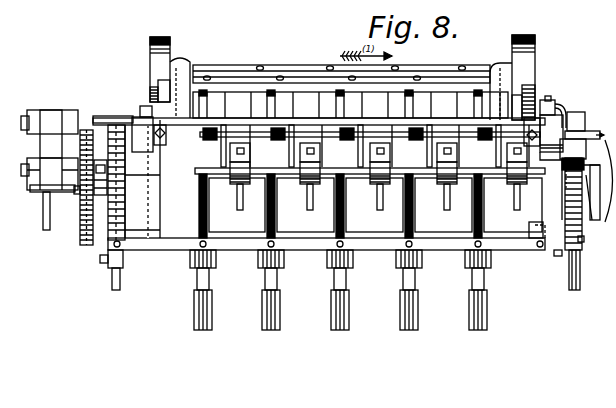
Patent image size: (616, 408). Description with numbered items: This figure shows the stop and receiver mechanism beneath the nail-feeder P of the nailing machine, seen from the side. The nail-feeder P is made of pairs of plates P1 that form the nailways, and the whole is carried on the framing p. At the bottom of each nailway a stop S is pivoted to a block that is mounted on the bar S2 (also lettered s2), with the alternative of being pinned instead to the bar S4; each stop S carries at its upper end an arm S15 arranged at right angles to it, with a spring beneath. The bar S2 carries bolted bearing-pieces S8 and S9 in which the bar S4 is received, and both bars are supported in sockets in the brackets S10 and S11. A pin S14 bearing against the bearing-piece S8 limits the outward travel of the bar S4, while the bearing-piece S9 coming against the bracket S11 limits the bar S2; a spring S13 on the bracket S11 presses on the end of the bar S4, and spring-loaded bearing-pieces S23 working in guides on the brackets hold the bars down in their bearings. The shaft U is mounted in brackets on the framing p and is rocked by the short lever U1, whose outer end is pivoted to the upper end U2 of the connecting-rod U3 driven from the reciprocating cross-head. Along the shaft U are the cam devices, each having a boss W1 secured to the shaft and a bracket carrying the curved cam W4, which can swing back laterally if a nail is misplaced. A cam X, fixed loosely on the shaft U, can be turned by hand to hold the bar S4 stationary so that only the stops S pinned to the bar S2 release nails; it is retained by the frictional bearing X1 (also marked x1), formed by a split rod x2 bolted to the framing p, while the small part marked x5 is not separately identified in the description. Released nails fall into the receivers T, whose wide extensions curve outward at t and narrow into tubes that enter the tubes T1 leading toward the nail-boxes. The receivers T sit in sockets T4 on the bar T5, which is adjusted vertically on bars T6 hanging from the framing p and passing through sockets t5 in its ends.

The nail-feeder P is at (341, 59).
The plates P1 is at (340, 77).
The framing p is at (342, 94).
The arm S15 is at (222, 124).
The pin S14 is at (180, 118).
The bar S2 is at (370, 135).
The stop S is at (357, 152).
The boss W1 is at (244, 185).
The curved cam W4 is at (376, 202).
The receiver T is at (370, 206).
The socket T4 is at (348, 259).
The tube T1 is at (349, 299).
The upper end of connecting-rod U2 is at (55, 110).
The short lever U1 is at (38, 146).
The connecting-rod U3 is at (43, 216).
The cam X is at (85, 199).
The frictional bearing X1 is at (100, 195).
The split rod or lever x2 is at (78, 194).
The bracket S10 is at (142, 134).
The spring S13 is at (141, 107).
The bearing-piece S8 is at (162, 139).
The bar S4 is at (576, 118).
The frictional bearing x1 is at (123, 254).
The pin x5 is at (101, 262).
The vertical bar T6 is at (120, 278).
The bearing-piece S23 is at (552, 101).
The bracket S11 is at (551, 133).
The bearing-piece S9 is at (532, 132).
The bar s2 is at (605, 135).
The shaft U is at (587, 161).
The bar T5 is at (531, 240).
The socket t5 is at (584, 242).
The curved-out point t is at (562, 256).